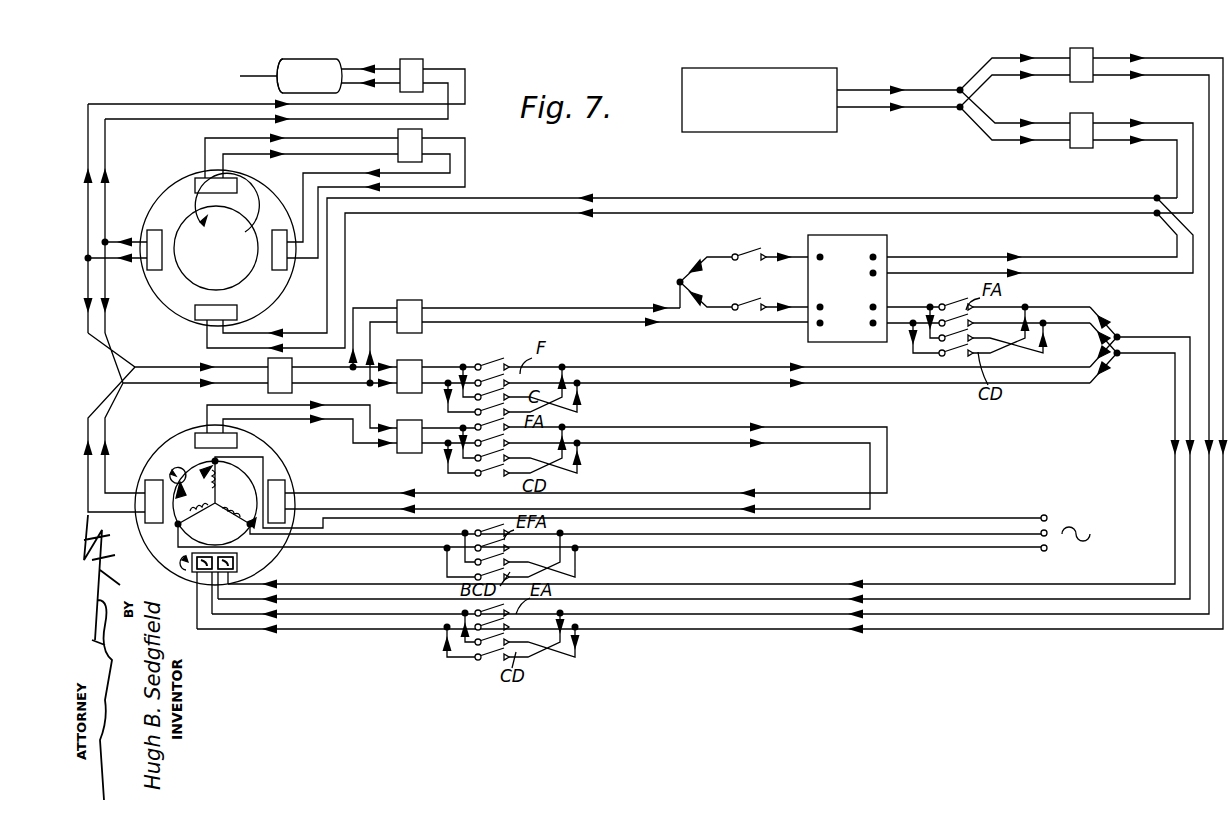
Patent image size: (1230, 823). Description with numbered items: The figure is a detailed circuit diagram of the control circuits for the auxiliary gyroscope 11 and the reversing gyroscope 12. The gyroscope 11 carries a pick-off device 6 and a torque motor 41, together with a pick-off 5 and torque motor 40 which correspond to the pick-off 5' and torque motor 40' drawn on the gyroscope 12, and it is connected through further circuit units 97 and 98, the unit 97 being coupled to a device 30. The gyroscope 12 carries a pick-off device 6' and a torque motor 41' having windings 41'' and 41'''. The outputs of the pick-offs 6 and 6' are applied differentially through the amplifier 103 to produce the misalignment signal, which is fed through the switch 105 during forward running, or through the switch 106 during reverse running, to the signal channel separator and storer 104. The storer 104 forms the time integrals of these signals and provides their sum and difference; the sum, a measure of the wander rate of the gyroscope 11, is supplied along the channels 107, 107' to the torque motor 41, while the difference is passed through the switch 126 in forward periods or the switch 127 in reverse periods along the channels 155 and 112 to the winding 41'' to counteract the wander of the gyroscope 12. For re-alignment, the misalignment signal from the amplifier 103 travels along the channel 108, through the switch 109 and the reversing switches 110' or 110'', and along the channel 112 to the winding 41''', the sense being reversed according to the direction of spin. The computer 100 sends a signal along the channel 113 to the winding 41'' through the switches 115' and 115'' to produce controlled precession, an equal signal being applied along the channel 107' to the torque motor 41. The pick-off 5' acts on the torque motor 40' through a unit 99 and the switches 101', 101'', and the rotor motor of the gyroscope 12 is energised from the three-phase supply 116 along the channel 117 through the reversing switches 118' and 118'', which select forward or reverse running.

The pole winding of generator 5 is at (206, 173).
The pick-off 5' is at (204, 428).
The pick-off device 6 is at (138, 241).
The pick-off device 6' is at (150, 494).
The auxiliary gyroscope 11 is at (288, 185).
The reversing gyroscope 12 is at (304, 451).
The drive shaft 30 is at (307, 52).
The pole winding of generator 40 is at (295, 261).
The torque motor 40' is at (295, 496).
The torque motor 41 is at (199, 325).
The torque motor 41' is at (185, 568).
The torque motor winding 41'' is at (182, 579).
The torque motor winding 41''' is at (258, 570).
The amplifier 97 is at (418, 53).
The amplifier 98 is at (425, 138).
The amplifier 99 is at (410, 448).
The computer 100 is at (836, 73).
The switch 101' is at (465, 435).
The switch 101'' is at (465, 466).
The amplifier 103 is at (270, 365).
The signal channel separator and storer 104 is at (847, 288).
The switch 105 is at (762, 244).
The switch 106 is at (757, 318).
The channel 107 is at (1040, 238).
The channel 107' is at (700, 273).
The channel 108 is at (378, 370).
The switch 109 is at (425, 376).
The switch 110' is at (465, 369).
The switch 110'' is at (451, 395).
The channel 112 is at (1178, 400).
The channel 113 is at (1216, 297).
The switch 115' is at (452, 629).
The switch 115'' is at (471, 652).
The three-phase supply 116 is at (1050, 540).
The channel 117 is at (728, 515).
The switch 118' is at (457, 540).
The switch 118'' is at (455, 559).
The switch 126 is at (956, 296).
The switch 127 is at (965, 360).
The channel 155 is at (905, 330).